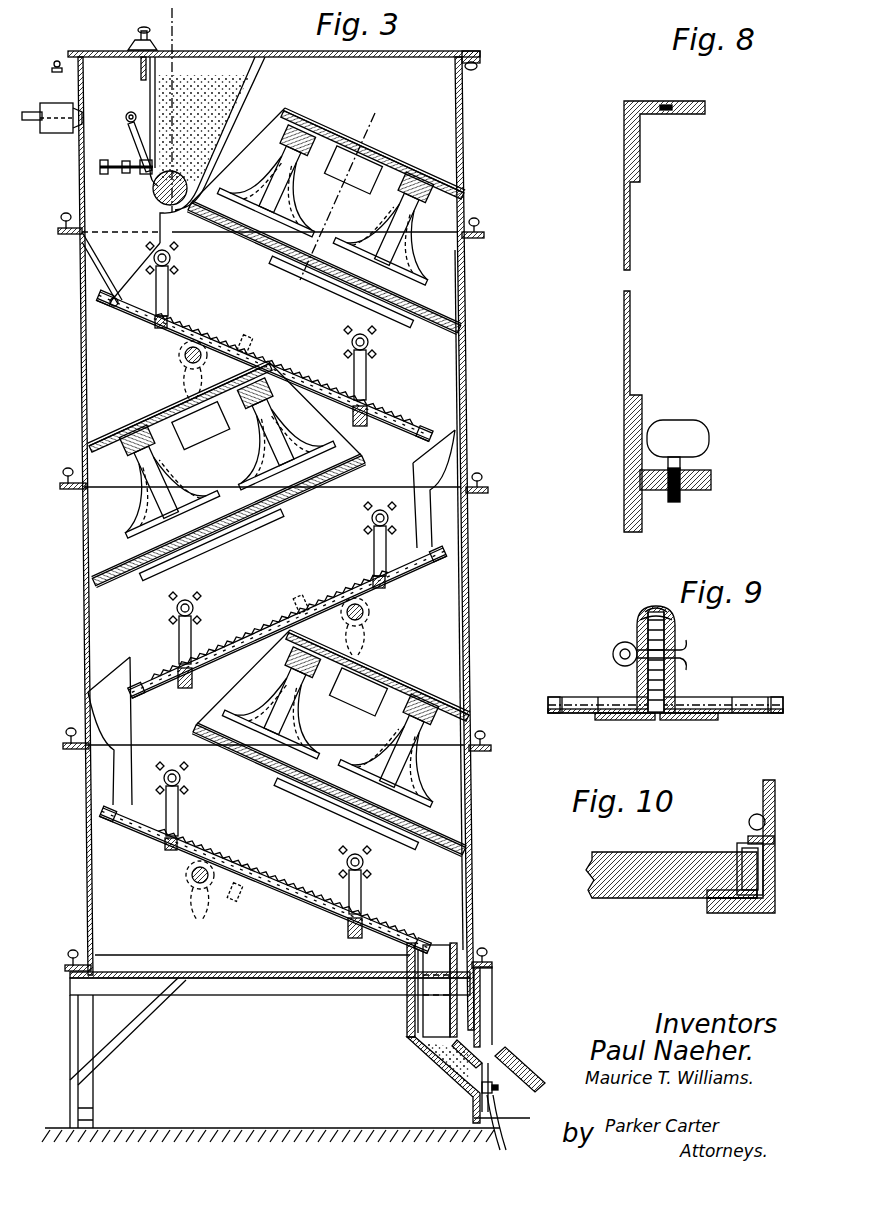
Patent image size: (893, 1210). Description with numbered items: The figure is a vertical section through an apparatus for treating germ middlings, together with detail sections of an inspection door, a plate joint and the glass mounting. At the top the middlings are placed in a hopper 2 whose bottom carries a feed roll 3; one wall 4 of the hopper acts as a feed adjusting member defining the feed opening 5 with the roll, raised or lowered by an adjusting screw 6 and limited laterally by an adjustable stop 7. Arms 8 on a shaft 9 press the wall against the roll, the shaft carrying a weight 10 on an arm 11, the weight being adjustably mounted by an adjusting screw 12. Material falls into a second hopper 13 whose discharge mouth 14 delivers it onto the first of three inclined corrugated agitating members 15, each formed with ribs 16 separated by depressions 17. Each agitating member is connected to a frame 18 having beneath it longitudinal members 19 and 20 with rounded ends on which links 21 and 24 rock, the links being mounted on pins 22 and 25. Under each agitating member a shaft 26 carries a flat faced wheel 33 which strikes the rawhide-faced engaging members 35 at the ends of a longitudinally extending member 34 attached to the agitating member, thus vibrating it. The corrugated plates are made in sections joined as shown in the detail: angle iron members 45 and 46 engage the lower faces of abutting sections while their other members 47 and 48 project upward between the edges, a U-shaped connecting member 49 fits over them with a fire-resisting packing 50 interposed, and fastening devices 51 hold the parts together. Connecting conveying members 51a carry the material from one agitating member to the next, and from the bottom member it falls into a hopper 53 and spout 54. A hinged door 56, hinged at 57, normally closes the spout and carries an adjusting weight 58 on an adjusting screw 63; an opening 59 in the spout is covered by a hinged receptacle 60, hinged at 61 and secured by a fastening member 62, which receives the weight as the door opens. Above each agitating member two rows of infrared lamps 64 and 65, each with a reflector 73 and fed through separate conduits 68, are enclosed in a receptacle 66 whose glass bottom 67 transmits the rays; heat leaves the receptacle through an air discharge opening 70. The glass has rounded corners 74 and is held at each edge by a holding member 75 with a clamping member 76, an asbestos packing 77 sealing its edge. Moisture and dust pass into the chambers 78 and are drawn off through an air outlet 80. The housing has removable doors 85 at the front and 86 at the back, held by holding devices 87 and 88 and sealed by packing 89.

In FIG. 3, the hopper 2 is at (247, 62).
In FIG. 3, the feed roll 3 is at (160, 197).
In FIG. 3, the wall 4 is at (145, 10).
In FIG. 3, the feed opening 5 is at (375, 113).
In FIG. 3, the adjusting screw 6 is at (132, 58).
In FIG. 3, the adjustable stop 7 is at (100, 168).
In FIG. 3, the arm 8 is at (136, 136).
In FIG. 3, the shaft 9 is at (128, 114).
In FIG. 3, the weight 10 is at (55, 133).
In FIG. 3, the arm 11 is at (30, 112).
In FIG. 3, the adjusting screw 12 is at (56, 62).
In FIG. 3, the second hopper 13 is at (100, 262).
In FIG. 3, the discharge mouth 14 is at (100, 288).
In FIG. 3, the agitating member 15 is at (238, 338).
In FIG. 9, the agitating member 15 is at (612, 703).
In FIG. 3, the rib 16 is at (300, 392).
In FIG. 9, the rib 16 is at (572, 702).
In FIG. 3, the depression 17 is at (268, 372).
In FIG. 9, the depression 17 is at (554, 700).
In FIG. 3, the frame 18 is at (100, 296).
In FIG. 3, the longitudinal member 19 is at (155, 324).
In FIG. 3, the longitudinal member 20 is at (364, 428).
In FIG. 3, the link 21 is at (168, 292).
In FIG. 3, the pin 22 is at (172, 256).
In FIG. 3, the link 24 is at (366, 378).
In FIG. 3, the pin 25 is at (370, 344).
In FIG. 3, the shaft 26 is at (185, 352).
In FIG. 3, the flat faced wheel 33 is at (180, 370).
In FIG. 3, the longitudinally extending member 34 is at (246, 344).
In FIG. 3, the engaging member 35 is at (279, 656).
In FIG. 9, the angle iron member 45 is at (680, 720).
In FIG. 9, the angle iron member 46 is at (628, 720).
In FIG. 9, the angle iron member 47 is at (676, 630).
In FIG. 9, the angle iron member 48 is at (640, 634).
In FIG. 9, the U-shaped connecting member 49 is at (652, 608).
In FIG. 9, the fire-resisting packing 50 is at (642, 618).
In FIG. 9, the fastening device 51 is at (613, 654).
In FIG. 3, the connecting conveying member 51a is at (432, 518).
In FIG. 3, the hopper 53 is at (428, 1004).
In FIG. 3, the spout 54 is at (412, 1046).
In FIG. 3, the hinged door 56 is at (488, 1062).
In FIG. 3, the hinge 57 is at (440, 1062).
In FIG. 3, the adjusting weight 58 is at (501, 1132).
In FIG. 3, the opening 59 is at (494, 1085).
In FIG. 3, the hinged receptacle 60 is at (512, 1050).
In FIG. 3, the hinge 61 is at (488, 1050).
In FIG. 3, the fastening member 62 is at (500, 1090).
In FIG. 3, the adjusting screw 63 is at (520, 1118).
In FIG. 3, the lamp 64 is at (360, 285).
In FIG. 3, the lamp 65 is at (265, 230).
In FIG. 3, the receptacle 66 is at (430, 205).
In FIG. 3, the glass member 67 is at (430, 300).
In FIG. 10, the glass member 67 is at (610, 898).
In FIG. 3, the conduit 68 is at (300, 125).
In FIG. 3, the air discharge opening 70 is at (362, 168).
In FIG. 3, the reflector 73 is at (300, 400).
In FIG. 10, the rounded corner 74 is at (690, 900).
In FIG. 3, the holding member 75 is at (420, 296).
In FIG. 10, the holding member 75 is at (750, 913).
In FIG. 10, the clamping member 76 is at (752, 830).
In FIG. 10, the packing 77 is at (742, 870).
In FIG. 3, the chamber 78 is at (445, 385).
In FIG. 3, the air outlet 80 is at (410, 325).
In FIG. 3, the removable door 85 is at (462, 100).
In FIG. 8, the removable door 85 is at (636, 302).
In FIG. 3, the removable door 86 is at (82, 376).
In FIG. 3, the holding device 87 is at (480, 222).
In FIG. 8, the holding device 87 is at (700, 432).
In FIG. 3, the holding device 88 is at (64, 220).
In FIG. 3, the packing 89 is at (484, 237).
In FIG. 8, the packing 89 is at (705, 107).